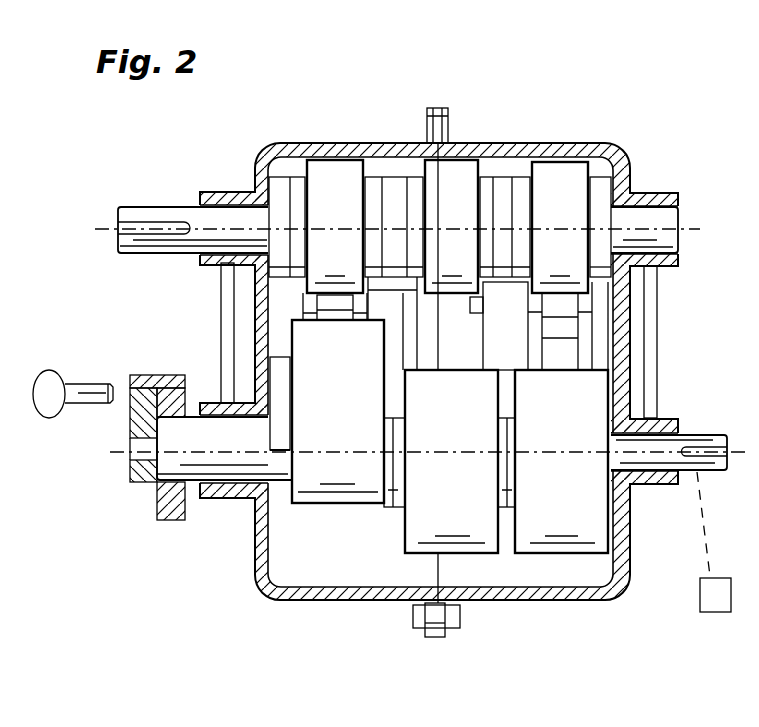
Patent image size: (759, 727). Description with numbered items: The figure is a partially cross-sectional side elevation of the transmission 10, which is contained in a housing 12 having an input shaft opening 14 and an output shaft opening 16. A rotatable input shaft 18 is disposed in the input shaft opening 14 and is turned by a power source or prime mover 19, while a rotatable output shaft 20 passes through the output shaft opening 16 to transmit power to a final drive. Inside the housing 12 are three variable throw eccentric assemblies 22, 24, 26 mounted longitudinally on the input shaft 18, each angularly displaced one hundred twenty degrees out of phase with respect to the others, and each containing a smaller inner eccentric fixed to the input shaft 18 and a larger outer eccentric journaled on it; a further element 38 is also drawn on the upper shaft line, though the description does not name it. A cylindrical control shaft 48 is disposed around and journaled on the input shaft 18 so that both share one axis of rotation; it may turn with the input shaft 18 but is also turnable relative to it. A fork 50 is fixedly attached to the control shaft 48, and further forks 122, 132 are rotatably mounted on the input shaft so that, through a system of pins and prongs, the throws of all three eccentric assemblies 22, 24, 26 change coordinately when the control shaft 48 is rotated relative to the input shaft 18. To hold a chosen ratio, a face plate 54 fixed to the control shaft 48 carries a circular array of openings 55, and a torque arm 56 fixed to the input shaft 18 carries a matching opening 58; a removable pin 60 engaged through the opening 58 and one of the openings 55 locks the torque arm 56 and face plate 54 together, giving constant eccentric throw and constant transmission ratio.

The transmission 10 is at (324, 114).
The housing 12 is at (597, 138).
The input shaft opening 14 is at (703, 438).
The output shaft opening 16 is at (198, 263).
The input shaft 18 is at (135, 457).
The prime mover 19 is at (714, 542).
The output shaft 20 is at (173, 218).
The variable throw eccentric assembly 22 is at (316, 512).
The variable throw eccentric assembly 24 is at (479, 560).
The variable throw eccentric assembly 26 is at (569, 560).
The gear 38 is at (323, 180).
The control shaft 48 is at (195, 465).
The fork 50 is at (283, 433).
The face plate 54 is at (165, 508).
The openings 55 is at (181, 393).
The torque arm 56 is at (133, 420).
The opening 58 is at (136, 375).
The removable pin 60 is at (45, 388).
The fork 122 is at (391, 490).
The fork 132 is at (505, 488).